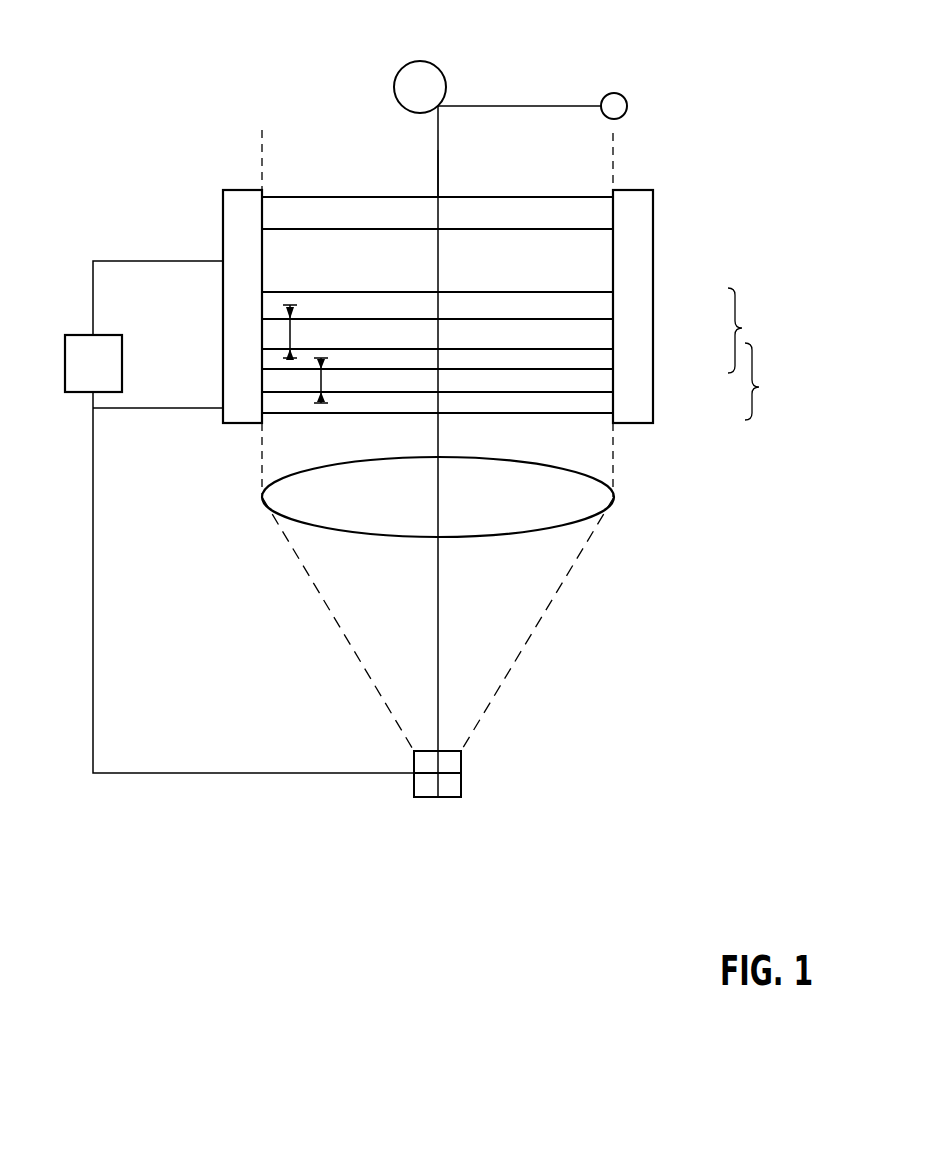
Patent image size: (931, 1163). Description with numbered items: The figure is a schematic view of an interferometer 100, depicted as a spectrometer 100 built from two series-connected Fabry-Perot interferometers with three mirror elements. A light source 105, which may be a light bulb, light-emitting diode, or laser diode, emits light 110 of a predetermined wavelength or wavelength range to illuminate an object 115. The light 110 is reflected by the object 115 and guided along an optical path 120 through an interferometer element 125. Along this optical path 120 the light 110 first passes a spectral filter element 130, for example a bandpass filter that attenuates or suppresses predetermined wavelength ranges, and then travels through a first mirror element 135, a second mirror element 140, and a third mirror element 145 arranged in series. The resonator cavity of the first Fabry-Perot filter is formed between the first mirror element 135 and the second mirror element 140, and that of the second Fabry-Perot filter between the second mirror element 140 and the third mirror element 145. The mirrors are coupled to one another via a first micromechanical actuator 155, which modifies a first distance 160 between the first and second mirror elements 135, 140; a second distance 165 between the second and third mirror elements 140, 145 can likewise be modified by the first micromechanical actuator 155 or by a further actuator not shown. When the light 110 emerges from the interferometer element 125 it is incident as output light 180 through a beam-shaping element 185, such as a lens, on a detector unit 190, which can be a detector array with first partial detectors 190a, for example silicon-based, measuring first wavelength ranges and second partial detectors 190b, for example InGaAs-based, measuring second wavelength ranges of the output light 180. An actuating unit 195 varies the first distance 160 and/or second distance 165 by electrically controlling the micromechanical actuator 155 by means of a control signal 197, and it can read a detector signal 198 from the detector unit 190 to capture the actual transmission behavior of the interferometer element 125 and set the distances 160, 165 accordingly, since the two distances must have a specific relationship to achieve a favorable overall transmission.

The interferometer 100 is at (110, 160).
The light source 105 is at (613, 95).
The light 110 is at (523, 105).
The object 115 is at (421, 68).
The optical path 120 is at (450, 173).
The interferometer element 125 is at (476, 332).
The spectral filter element 130 is at (598, 213).
The first mirror element 135 is at (598, 305).
The second mirror element 140 is at (598, 357).
The third mirror element 145 is at (598, 403).
The first micromechanical actuator 155 is at (635, 262).
The first distance 160 is at (290, 329).
The second distance 165 is at (321, 377).
The output light 180 is at (438, 435).
The beam-shaping element 185 is at (563, 498).
The detector unit 190 is at (482, 819).
The first partial detectors 190a is at (450, 762).
The second partial detectors 190b is at (452, 785).
The actuating unit 195 is at (113, 378).
The control signal 197 is at (151, 260).
The detector signal 198 is at (157, 410).